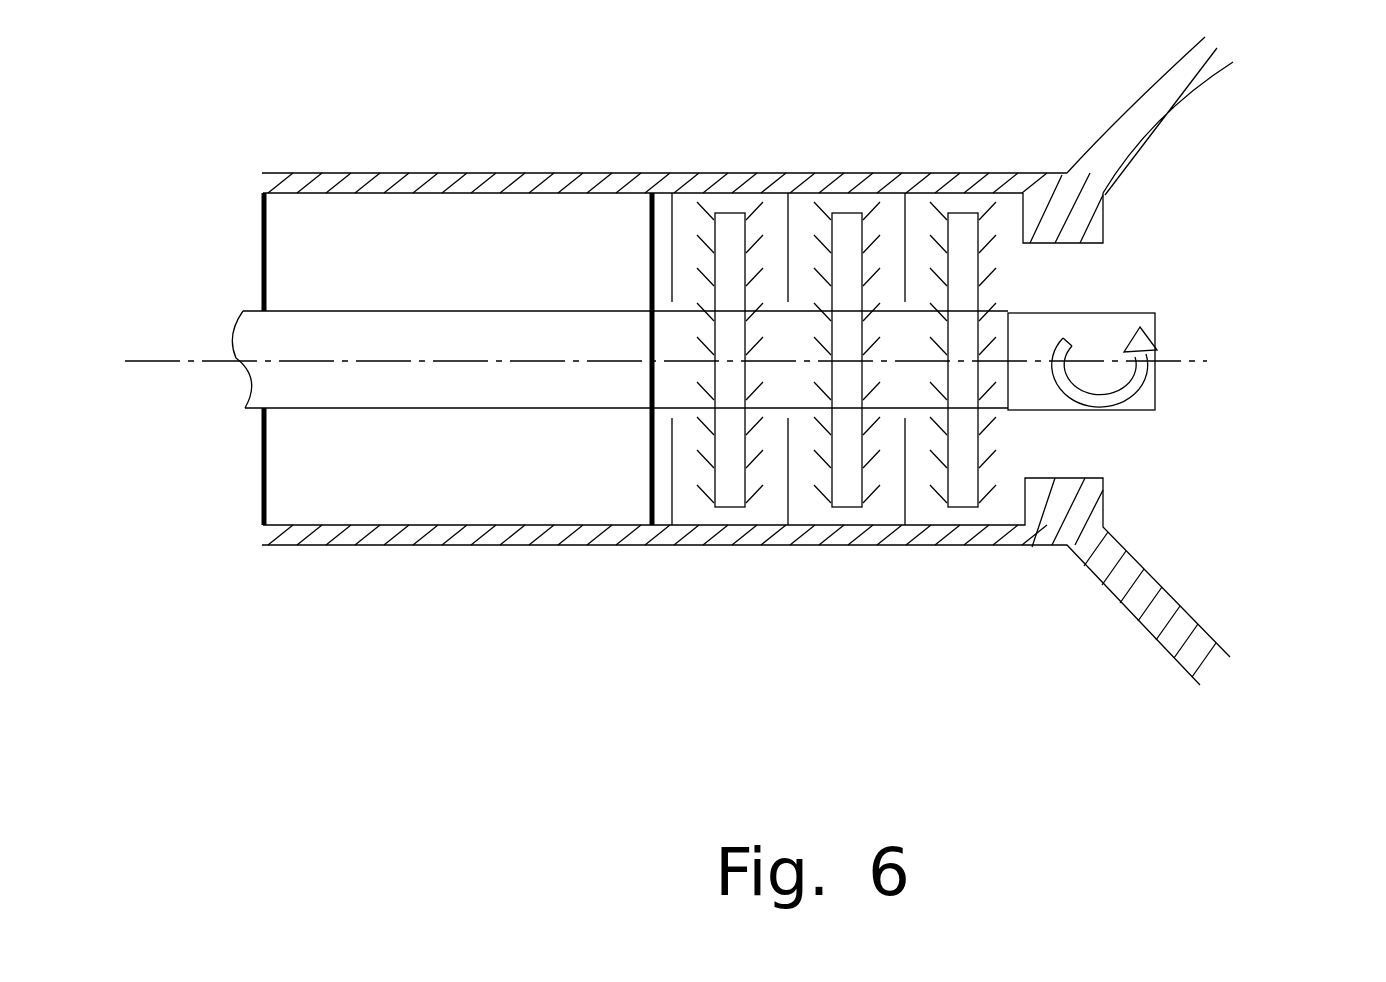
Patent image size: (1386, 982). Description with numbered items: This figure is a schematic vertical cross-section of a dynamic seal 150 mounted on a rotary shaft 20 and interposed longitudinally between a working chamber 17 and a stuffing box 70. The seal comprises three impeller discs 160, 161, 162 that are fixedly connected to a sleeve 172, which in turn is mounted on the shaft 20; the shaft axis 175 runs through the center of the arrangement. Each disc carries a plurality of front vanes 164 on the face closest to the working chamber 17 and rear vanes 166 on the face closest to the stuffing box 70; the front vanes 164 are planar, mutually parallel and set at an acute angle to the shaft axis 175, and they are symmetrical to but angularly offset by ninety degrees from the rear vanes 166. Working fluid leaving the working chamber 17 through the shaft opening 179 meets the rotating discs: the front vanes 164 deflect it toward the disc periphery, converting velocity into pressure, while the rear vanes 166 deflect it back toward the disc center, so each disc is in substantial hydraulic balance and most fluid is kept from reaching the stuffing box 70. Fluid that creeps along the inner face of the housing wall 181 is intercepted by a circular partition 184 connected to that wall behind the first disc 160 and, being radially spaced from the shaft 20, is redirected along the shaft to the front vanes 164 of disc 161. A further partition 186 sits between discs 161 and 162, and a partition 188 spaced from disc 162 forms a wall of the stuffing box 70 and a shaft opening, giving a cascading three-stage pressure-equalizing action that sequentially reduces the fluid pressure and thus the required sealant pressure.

The working chamber 17 is at (1150, 225).
The rotary shaft 20 is at (270, 377).
The stuffing box 70 is at (507, 497).
The dynamic seal 150 is at (968, 193).
The impeller disc 160 is at (962, 497).
The impeller disc 161 is at (843, 497).
The impeller disc 162 is at (728, 498).
The front vanes 164 is at (995, 430).
The rear vanes 166 is at (935, 500).
The sleeve 172 is at (686, 383).
The shaft axis 175 is at (1183, 363).
The shaft opening 179 is at (1060, 278).
The housing wall 181 is at (508, 182).
The partition 184 is at (907, 240).
The partition 186 is at (787, 230).
The partition 188 is at (670, 247).